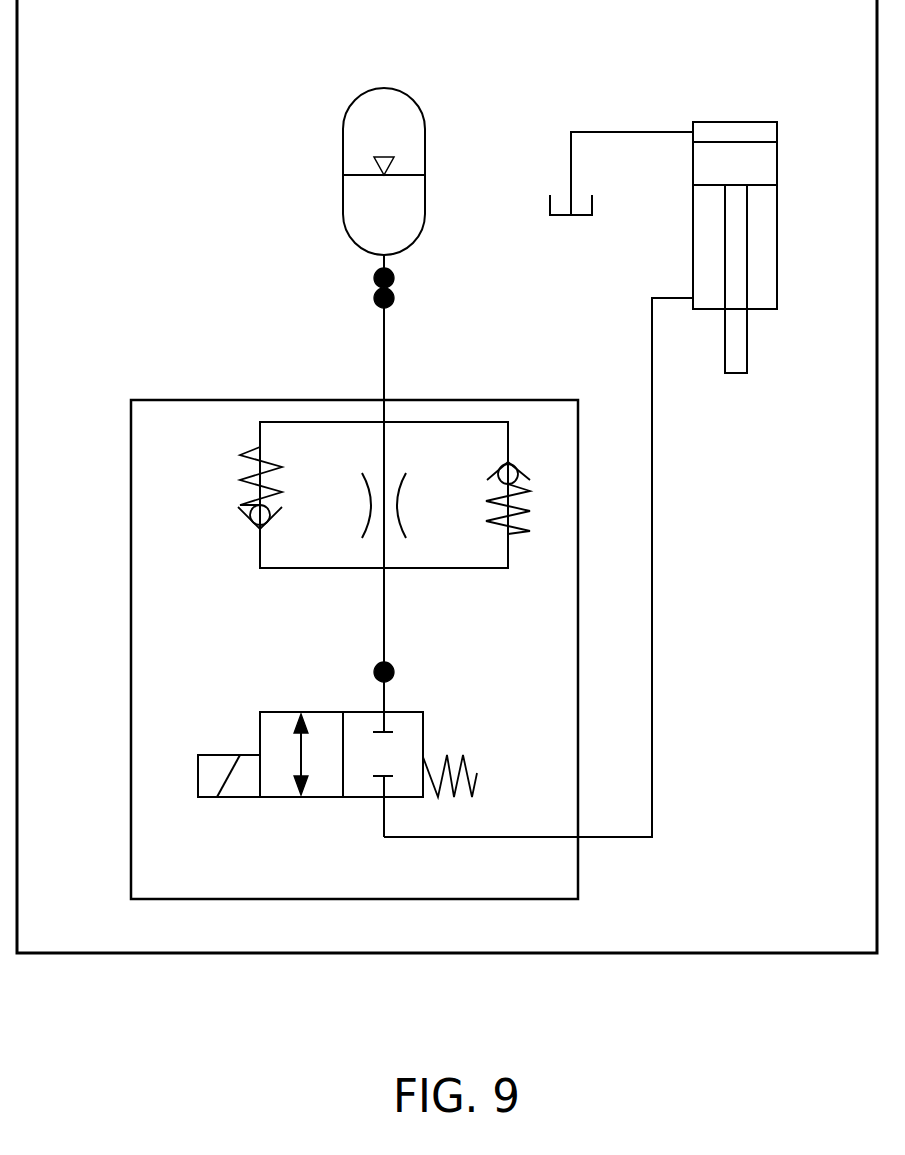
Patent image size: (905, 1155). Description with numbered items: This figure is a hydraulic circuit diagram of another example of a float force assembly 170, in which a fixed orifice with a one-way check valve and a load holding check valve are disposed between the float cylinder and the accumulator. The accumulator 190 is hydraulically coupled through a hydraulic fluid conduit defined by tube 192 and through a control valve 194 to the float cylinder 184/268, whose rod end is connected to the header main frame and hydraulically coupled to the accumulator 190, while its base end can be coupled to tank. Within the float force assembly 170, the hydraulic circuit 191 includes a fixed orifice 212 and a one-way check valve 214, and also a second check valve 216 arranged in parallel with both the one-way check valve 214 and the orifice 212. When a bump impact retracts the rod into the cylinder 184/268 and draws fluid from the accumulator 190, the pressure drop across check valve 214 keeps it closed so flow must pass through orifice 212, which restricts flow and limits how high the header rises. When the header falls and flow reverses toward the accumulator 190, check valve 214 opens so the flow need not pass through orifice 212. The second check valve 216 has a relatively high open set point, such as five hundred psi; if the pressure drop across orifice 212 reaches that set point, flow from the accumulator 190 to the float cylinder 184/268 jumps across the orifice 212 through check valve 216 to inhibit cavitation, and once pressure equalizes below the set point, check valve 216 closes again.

The float force assembly 170 is at (688, 44).
The hydraulic circuit 191 is at (515, 881).
The accumulator 190 is at (345, 148).
The conduit 192 is at (380, 333).
The fixed orifice 212 is at (365, 500).
The one-way check valve 214 is at (233, 479).
The second check valve 216 is at (533, 515).
The control valve 194 is at (422, 727).
The float cylinder 184 is at (822, 183).
The float cylinder 268 is at (708, 247).